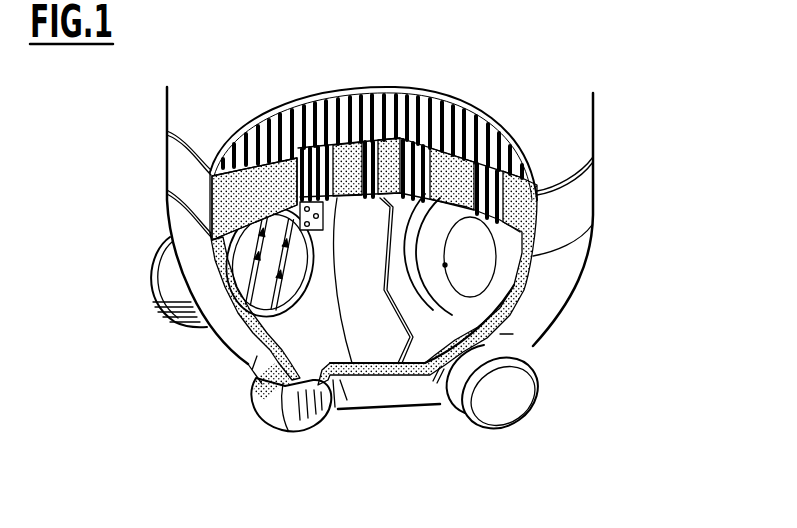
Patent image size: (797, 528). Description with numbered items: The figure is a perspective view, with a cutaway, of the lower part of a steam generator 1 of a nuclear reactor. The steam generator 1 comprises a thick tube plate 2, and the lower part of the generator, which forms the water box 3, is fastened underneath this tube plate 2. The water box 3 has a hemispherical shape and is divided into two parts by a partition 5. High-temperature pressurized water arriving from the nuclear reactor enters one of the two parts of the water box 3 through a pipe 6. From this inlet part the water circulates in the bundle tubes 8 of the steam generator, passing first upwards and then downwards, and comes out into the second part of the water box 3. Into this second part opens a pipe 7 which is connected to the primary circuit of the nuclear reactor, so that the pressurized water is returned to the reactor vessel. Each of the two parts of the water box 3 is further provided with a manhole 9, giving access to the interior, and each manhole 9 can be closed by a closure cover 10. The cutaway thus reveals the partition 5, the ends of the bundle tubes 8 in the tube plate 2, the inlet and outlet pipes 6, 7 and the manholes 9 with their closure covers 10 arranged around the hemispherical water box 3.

The steam generator 1 is at (166, 104).
The thick tube plate 2 is at (240, 193).
The water box 3 is at (549, 273).
The partition 5 is at (354, 335).
The pipe 6 is at (167, 261).
The pipe 7 is at (462, 273).
The bundle tubes 8 is at (474, 147).
The manhole 9 is at (280, 420).
The closure cover 10 is at (500, 405).